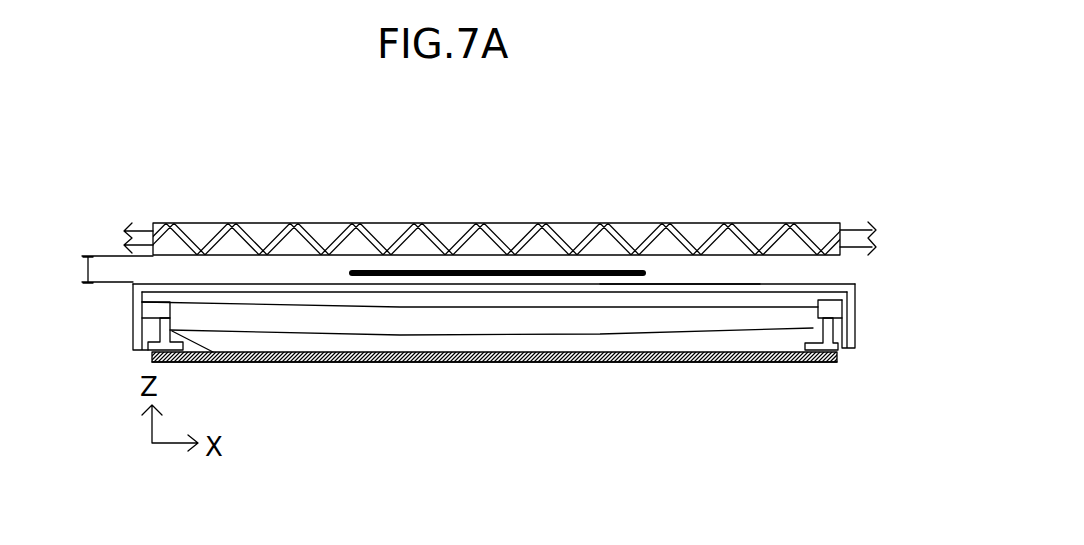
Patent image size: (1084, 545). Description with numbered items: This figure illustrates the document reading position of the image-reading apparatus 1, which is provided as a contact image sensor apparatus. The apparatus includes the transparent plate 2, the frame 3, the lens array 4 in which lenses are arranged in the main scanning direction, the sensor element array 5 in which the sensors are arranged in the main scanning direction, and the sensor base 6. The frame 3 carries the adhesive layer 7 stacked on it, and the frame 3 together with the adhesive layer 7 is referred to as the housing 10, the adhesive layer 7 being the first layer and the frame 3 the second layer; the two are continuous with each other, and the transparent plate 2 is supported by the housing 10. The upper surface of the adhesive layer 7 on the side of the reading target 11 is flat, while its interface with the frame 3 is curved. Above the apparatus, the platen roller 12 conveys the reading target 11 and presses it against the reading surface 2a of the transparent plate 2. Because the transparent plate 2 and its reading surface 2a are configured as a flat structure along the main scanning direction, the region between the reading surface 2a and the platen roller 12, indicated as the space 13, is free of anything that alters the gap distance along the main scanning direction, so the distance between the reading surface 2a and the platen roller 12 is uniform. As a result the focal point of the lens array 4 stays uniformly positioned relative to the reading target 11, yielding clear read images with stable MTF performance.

The image-reading apparatus 1 is at (774, 344).
The transparent plate 2 is at (755, 283).
The reading surface 2a is at (722, 283).
The frame 3 is at (856, 285).
The lens array 4 is at (857, 334).
The sensor element array 5 is at (160, 330).
The sensor base 6 is at (677, 362).
The adhesive layer 7 is at (776, 272).
The housing 10 is at (910, 254).
The reading target 11 is at (518, 271).
The platen roller 12 is at (383, 223).
The space 13 is at (96, 271).